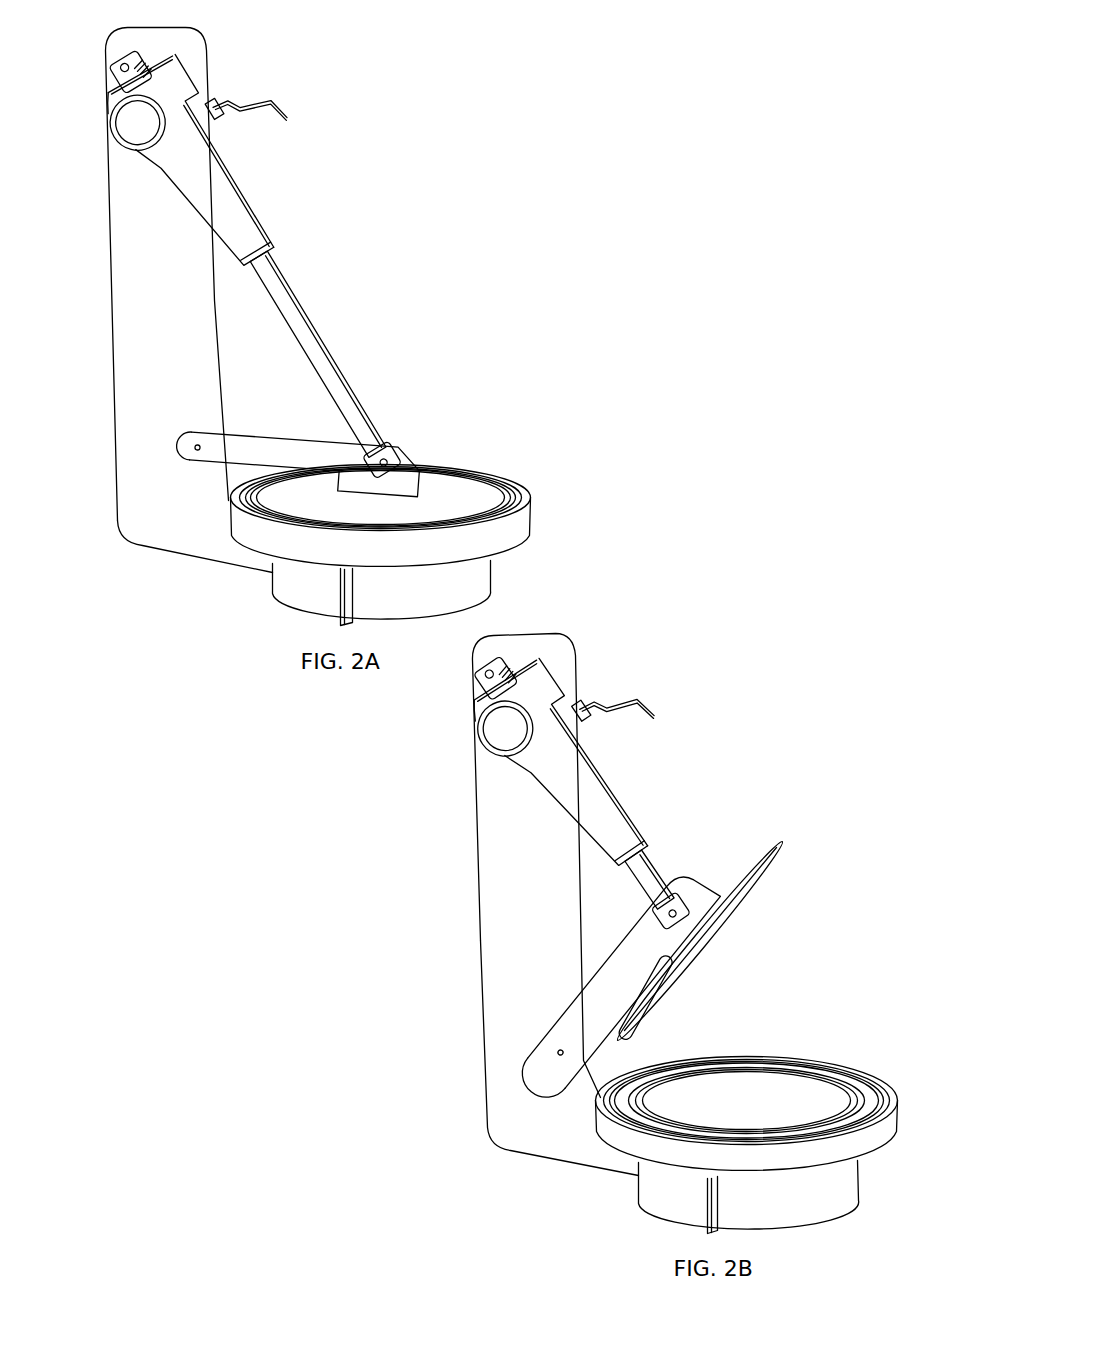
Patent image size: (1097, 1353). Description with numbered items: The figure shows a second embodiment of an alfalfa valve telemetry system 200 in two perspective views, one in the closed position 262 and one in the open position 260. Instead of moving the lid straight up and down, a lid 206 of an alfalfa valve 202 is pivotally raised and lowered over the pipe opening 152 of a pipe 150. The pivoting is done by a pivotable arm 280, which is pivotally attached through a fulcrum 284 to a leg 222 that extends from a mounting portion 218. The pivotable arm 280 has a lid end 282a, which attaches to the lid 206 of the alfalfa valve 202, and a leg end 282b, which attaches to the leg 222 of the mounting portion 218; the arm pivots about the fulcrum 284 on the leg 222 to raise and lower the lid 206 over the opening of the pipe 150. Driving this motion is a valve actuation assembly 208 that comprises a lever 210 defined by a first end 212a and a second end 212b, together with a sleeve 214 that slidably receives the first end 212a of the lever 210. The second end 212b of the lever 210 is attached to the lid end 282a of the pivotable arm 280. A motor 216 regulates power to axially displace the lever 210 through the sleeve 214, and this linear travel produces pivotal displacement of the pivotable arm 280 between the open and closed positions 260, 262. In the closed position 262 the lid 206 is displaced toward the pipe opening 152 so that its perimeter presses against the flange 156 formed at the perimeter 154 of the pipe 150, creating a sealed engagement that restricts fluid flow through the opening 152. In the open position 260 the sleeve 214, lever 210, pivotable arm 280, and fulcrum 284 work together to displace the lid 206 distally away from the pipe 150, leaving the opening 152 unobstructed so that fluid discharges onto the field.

In FIG. 2A, the alfalfa valve telemetry system 200 is at (329, 322).
In FIG. 2A, the pipe 150 is at (500, 588).
In FIG. 2B, the pipe 150 is at (600, 1223).
In FIG. 2B, the pipe opening 152 is at (807, 1083).
In FIG. 2A, the perimeter of the pipe 154 is at (530, 485).
In FIG. 2B, the perimeter of the pipe 154 is at (877, 1133).
In FIG. 2B, the flange 156 is at (870, 1103).
In FIG. 2A, the alfalfa valve 202 is at (430, 468).
In FIG. 2B, the alfalfa valve 202 is at (775, 897).
In FIG. 2A, the lid 206 is at (460, 460).
In FIG. 2B, the lid 206 is at (775, 852).
In FIG. 2A, the valve actuation assembly 208 is at (329, 265).
In FIG. 2B, the valve actuation assembly 208 is at (639, 885).
In FIG. 2A, the lever 210 is at (333, 305).
In FIG. 2B, the lever 210 is at (690, 875).
In FIG. 2A, the first end 212a is at (270, 280).
In FIG. 2B, the first end 212a is at (501, 674).
In FIG. 2A, the second end 212b is at (382, 440).
In FIG. 2B, the second end 212b is at (663, 880).
In FIG. 2A, the sleeve 214 is at (240, 217).
In FIG. 2B, the sleeve 214 is at (613, 813).
In FIG. 2A, the motor 216 is at (208, 112).
In FIG. 2B, the motor 216 is at (600, 720).
In FIG. 2A, the mounting portion 218 is at (161, 329).
In FIG. 2B, the mounting portion 218 is at (528, 923).
In FIG. 2A, the leg 222 is at (133, 347).
In FIG. 2B, the leg 222 is at (497, 945).
In FIG. 2B, the open position 260 is at (736, 1020).
In FIG. 2A, the closed position 262 is at (422, 504).
In FIG. 2B, the pivotable arm 280 is at (576, 986).
In FIG. 2A, the lid end 282a is at (304, 464).
In FIG. 2B, the lid end 282a is at (624, 977).
In FIG. 2A, the leg end 282b is at (184, 445).
In FIG. 2B, the leg end 282b is at (539, 1082).
In FIG. 2A, the fulcrum 284 is at (197, 447).
In FIG. 2B, the fulcrum 284 is at (560, 1052).